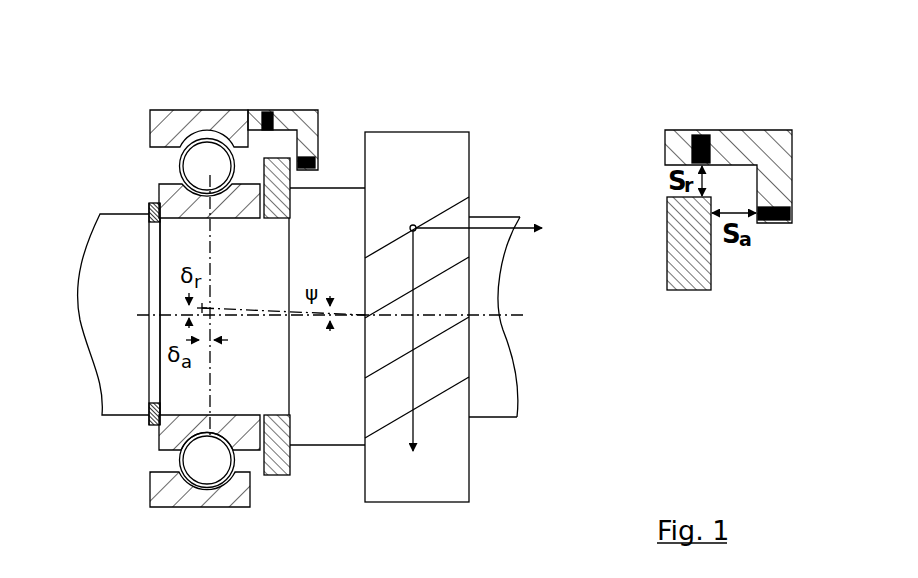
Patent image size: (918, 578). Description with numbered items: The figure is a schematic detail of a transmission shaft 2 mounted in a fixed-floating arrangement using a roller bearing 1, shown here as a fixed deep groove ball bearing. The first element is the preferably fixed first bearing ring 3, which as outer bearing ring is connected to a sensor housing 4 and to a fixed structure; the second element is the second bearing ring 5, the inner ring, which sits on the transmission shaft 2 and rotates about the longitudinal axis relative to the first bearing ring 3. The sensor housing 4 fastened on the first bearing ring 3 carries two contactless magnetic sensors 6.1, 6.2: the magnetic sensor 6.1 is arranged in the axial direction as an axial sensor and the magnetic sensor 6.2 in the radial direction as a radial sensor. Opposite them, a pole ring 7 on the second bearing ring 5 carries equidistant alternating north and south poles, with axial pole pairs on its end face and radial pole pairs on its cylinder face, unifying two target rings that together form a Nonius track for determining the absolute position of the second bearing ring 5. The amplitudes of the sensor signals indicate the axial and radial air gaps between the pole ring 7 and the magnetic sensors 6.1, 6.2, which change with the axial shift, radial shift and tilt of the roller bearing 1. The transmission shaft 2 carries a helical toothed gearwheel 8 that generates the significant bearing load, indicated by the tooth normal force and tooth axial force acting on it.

The roller bearing 1 is at (205, 293).
The transmission shaft 2 is at (112, 383).
The first bearing ring 3 is at (182, 497).
The sensor housing 4 is at (307, 118).
The second bearing ring 5 is at (163, 440).
The magnetic sensor 6.1 is at (315, 157).
The magnetic sensor 6.2 is at (268, 110).
The pole ring 7 is at (280, 474).
The helical toothed gearwheel 8 is at (476, 455).